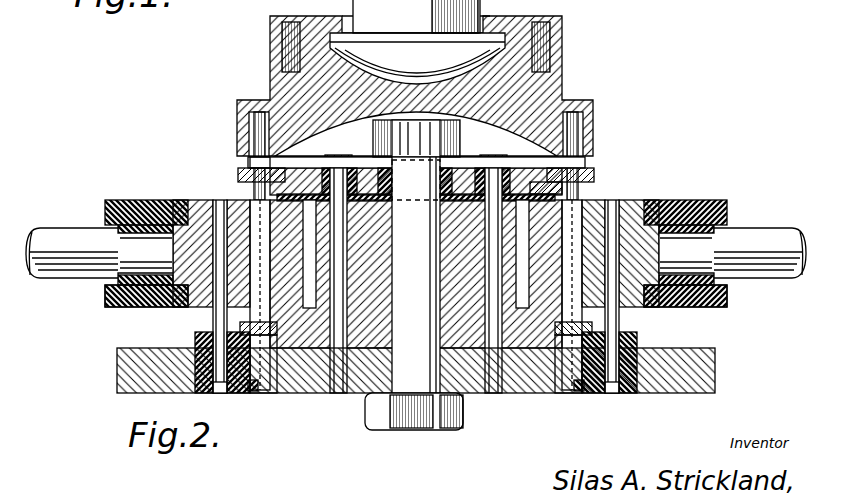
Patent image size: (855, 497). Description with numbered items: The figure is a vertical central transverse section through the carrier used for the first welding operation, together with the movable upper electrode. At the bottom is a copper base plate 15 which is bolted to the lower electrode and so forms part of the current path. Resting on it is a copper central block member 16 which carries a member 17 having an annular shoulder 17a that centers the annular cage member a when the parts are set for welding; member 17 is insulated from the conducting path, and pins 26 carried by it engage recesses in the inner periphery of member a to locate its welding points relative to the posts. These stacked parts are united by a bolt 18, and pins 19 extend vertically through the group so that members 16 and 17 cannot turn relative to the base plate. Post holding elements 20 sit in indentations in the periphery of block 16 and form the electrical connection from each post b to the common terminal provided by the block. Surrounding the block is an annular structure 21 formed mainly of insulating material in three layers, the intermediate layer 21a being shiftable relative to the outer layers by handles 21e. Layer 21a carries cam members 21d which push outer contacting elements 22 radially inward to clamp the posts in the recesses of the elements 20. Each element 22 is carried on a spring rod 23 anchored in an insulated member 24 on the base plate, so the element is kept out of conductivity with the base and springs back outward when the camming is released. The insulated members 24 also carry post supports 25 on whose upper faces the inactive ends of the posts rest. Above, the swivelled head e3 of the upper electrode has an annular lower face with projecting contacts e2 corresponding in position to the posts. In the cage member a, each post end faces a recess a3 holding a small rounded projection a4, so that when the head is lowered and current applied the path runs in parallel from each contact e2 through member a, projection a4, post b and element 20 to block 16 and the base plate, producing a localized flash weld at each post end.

The base plate 15 is at (120, 378).
The central block member 16 is at (486, 346).
The member 17 is at (548, 158).
The annular shoulder 17a is at (562, 190).
The bolt 18 is at (414, 275).
The pins 19 is at (331, 393).
The post holding elements 20 is at (314, 350).
The annular structure 21 is at (128, 198).
The intermediate layer 21a is at (108, 282).
The cam members 21d is at (170, 198).
The handles 21e is at (52, 235).
The outer contacting elements 22 is at (200, 315).
The spring rod 23 is at (216, 320).
The insulated member 24 is at (238, 394).
The post supports 25 is at (272, 394).
The pins 26 is at (410, 200).
The annular member a is at (592, 178).
The recess a3 is at (240, 175).
The projection a4 is at (262, 165).
The posts b is at (255, 192).
The projecting contacts e2 is at (255, 135).
The swivelled head e3 is at (548, 90).